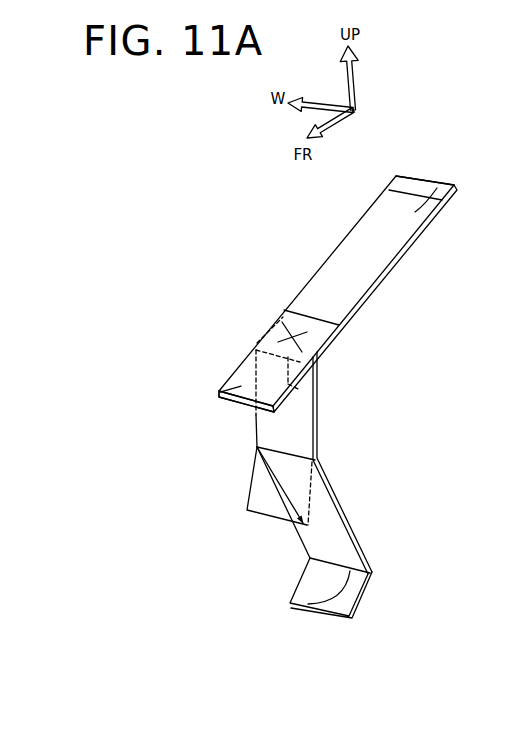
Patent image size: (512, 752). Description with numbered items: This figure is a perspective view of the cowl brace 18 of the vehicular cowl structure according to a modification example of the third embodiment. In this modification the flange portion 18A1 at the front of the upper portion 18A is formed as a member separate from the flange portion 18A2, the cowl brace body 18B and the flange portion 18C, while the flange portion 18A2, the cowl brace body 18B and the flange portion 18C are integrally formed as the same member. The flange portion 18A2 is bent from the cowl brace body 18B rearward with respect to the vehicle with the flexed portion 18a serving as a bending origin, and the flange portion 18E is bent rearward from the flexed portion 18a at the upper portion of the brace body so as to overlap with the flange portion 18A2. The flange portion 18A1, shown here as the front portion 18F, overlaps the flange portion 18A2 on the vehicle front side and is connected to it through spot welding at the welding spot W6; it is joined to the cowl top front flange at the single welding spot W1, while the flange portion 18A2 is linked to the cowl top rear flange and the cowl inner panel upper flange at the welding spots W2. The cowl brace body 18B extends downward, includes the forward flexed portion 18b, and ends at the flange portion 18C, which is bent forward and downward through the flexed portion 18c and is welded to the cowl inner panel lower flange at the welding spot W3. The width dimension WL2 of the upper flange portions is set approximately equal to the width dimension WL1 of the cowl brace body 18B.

The cowl brace 18 is at (240, 286).
The upper portion 18A is at (355, 283).
The flange portion 18A1 is at (195, 414).
The flange portion 18A2 is at (452, 184).
The flange portion 18E is at (311, 316).
The front flange portion 18F is at (219, 398).
The flexed portion 18a is at (300, 390).
The cowl brace body 18B is at (311, 442).
The flexed portion 18b is at (253, 475).
The flange portion 18C is at (340, 602).
The flexed portion 18c is at (307, 605).
The welding spot W1 is at (256, 380).
The welding spots W2 is at (389, 202).
The welding spot W3 is at (325, 578).
The welding spot W6 is at (292, 326).
The width dimension WL1 is at (279, 493).
The width dimension WL2 is at (417, 186).